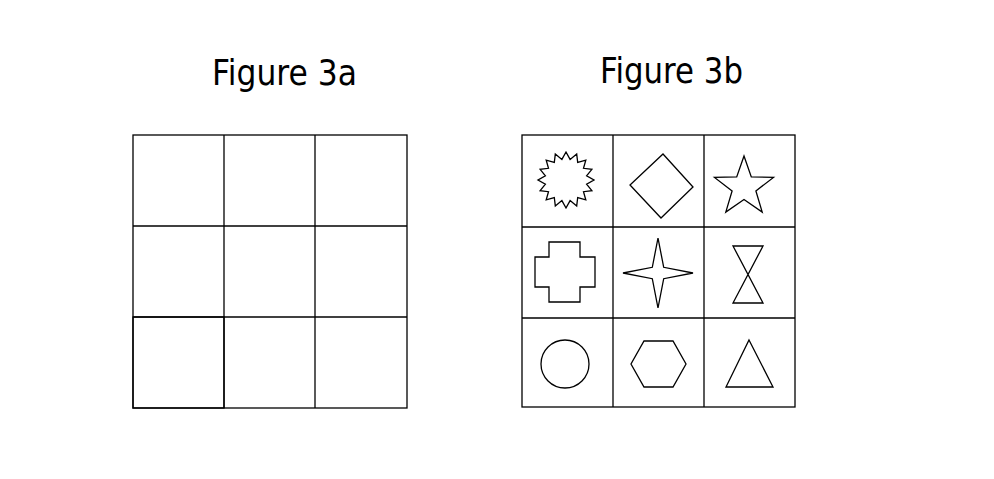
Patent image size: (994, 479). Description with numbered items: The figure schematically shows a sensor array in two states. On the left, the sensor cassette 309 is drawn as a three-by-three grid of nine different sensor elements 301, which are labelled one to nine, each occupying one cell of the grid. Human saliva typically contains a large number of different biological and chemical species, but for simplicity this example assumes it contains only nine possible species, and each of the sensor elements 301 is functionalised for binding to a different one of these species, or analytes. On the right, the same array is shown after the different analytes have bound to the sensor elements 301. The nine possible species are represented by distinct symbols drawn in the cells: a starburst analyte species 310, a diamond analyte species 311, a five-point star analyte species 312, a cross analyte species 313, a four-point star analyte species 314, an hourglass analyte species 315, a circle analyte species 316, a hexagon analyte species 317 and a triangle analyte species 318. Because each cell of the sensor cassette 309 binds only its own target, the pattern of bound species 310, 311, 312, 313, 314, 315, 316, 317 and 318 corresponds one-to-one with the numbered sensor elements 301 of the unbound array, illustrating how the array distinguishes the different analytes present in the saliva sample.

In FIG. 3A, the sensor cassette 309 is at (114, 103).
In FIG. 3A, the sensor element 301 is at (150, 362).
In FIG. 3B, the analyte species 310 is at (565, 173).
In FIG. 3B, the analyte species 311 is at (661, 180).
In FIG. 3B, the analyte species 312 is at (745, 188).
In FIG. 3B, the analyte species 313 is at (547, 267).
In FIG. 3B, the analyte species 314 is at (695, 273).
In FIG. 3B, the analyte species 315 is at (747, 260).
In FIG. 3B, the analyte species 316 is at (556, 365).
In FIG. 3B, the analyte species 317 is at (656, 370).
In FIG. 3B, the analyte species 318 is at (748, 367).